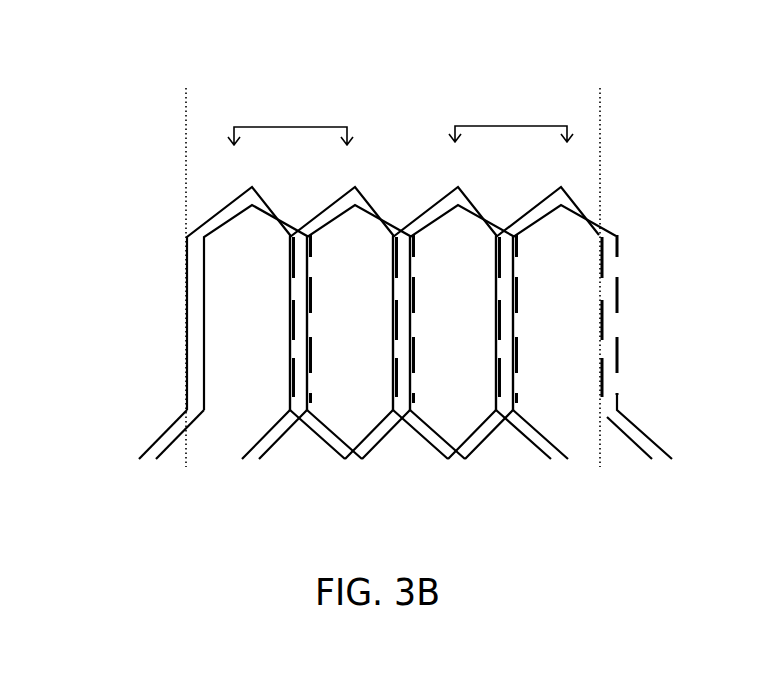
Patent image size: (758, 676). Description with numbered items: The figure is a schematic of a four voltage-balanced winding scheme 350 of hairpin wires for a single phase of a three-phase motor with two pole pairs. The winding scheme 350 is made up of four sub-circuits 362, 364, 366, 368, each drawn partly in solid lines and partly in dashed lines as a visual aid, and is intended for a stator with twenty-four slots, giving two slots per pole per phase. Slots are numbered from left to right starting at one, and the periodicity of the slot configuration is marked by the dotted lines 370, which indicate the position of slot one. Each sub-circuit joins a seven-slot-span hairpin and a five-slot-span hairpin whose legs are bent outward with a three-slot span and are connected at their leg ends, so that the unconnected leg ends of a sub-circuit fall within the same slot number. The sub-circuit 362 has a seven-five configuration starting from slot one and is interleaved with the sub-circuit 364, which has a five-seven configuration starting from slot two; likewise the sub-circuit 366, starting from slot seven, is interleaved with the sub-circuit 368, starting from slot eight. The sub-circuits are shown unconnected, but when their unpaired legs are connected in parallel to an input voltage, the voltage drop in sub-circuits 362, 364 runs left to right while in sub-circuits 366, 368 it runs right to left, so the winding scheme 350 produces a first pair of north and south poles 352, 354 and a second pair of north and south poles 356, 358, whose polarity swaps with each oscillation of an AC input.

The four voltage-balanced winding scheme 350 is at (101, 111).
The north pole of first pair 352 is at (249, 175).
The south pole of first pair 354 is at (353, 175).
The north pole of second pair 356 is at (461, 173).
The south pole of second pair 358 is at (567, 169).
The sub-circuit 362 is at (139, 460).
The sub-circuit 364 is at (156, 457).
The sub-circuit 366 is at (652, 458).
The sub-circuit 368 is at (672, 458).
The dotted lines 370 is at (187, 77).